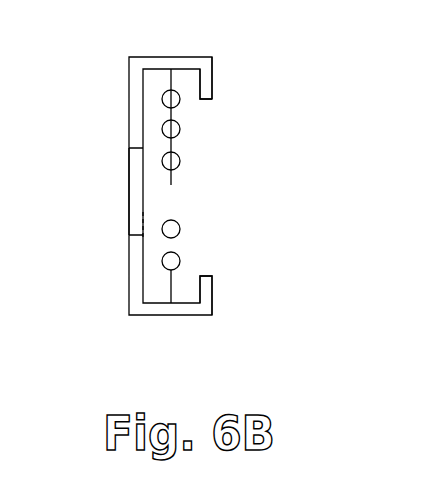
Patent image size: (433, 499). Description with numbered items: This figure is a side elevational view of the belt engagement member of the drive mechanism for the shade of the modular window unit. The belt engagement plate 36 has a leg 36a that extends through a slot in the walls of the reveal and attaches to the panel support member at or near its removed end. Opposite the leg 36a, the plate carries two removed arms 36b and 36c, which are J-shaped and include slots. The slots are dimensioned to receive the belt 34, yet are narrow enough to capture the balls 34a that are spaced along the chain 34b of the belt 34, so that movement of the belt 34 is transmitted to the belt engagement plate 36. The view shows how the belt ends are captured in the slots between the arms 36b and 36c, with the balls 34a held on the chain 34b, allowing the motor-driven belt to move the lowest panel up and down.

The belt engagement plate 36 is at (107, 110).
The leg 36a is at (137, 205).
The removed arm 36b is at (213, 80).
The removed arm 36c is at (213, 293).
The belt 34 is at (191, 160).
The balls 34a is at (177, 236).
The chain 34b is at (180, 129).